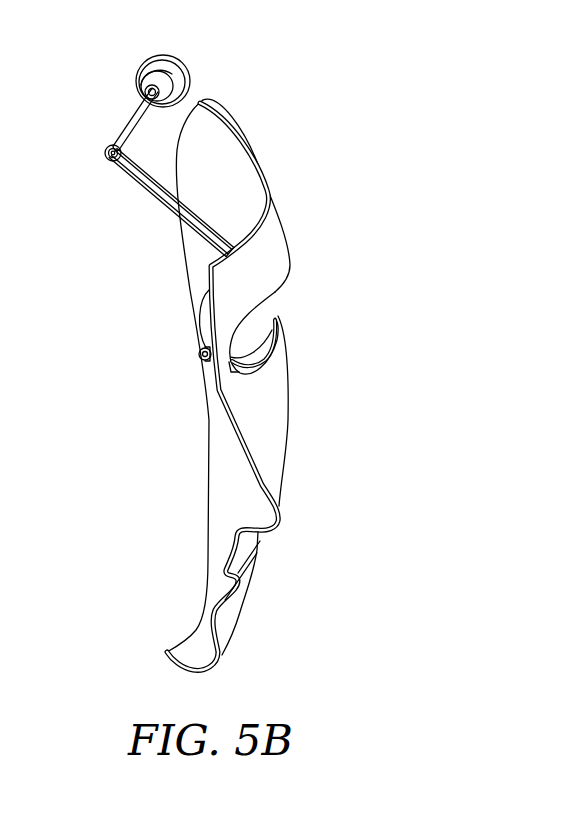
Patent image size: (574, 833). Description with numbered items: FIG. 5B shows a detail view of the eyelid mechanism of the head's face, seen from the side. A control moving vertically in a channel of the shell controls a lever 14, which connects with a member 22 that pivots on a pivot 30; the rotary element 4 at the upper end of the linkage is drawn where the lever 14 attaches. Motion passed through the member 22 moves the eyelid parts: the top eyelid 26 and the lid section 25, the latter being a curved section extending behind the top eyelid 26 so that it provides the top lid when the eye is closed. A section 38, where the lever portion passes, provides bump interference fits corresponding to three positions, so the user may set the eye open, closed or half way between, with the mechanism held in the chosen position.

The adjustment knob 4 is at (167, 66).
The lever 14 is at (133, 118).
The pivot 30 is at (104, 154).
The member 22 is at (133, 188).
The lid section 25 is at (202, 320).
The section 38 is at (204, 356).
The top eyelid 26 is at (275, 347).